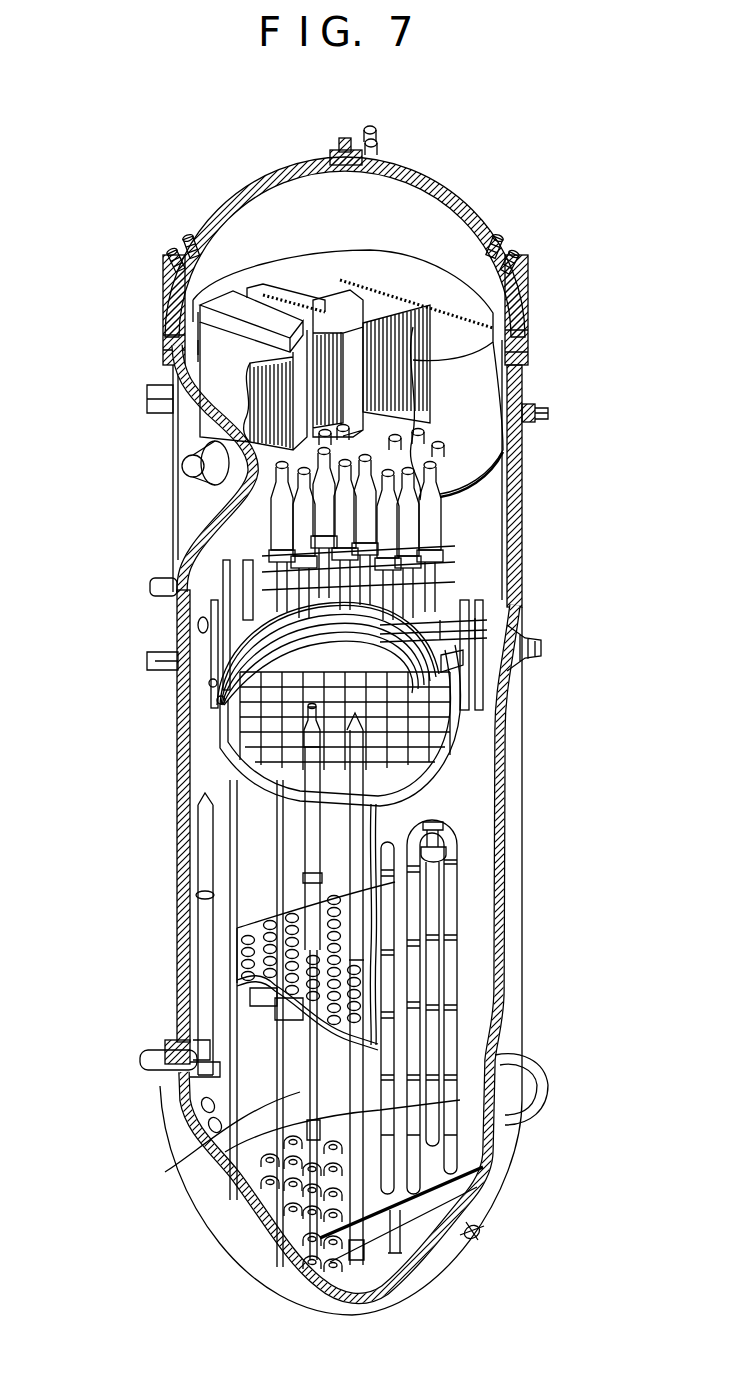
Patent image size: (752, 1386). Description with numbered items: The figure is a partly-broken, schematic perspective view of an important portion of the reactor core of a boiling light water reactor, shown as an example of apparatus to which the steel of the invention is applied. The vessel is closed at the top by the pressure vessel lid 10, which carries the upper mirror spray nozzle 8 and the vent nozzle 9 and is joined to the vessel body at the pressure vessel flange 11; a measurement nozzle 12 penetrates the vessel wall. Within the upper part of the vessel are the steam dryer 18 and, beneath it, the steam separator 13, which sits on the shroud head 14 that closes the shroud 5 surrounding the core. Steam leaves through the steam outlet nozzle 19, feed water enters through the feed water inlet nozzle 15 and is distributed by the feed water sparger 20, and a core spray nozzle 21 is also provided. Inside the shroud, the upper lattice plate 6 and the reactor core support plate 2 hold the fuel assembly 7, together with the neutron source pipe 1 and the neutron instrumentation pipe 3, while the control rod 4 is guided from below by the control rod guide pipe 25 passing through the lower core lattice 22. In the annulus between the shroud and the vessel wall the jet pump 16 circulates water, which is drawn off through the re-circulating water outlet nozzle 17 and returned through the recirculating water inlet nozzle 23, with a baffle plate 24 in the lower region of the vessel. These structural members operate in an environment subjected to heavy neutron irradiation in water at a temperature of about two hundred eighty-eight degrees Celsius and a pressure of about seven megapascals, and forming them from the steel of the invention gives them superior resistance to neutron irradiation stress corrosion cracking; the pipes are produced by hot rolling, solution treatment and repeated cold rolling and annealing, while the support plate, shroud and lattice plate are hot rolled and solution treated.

The neutron source pipe 1 is at (305, 823).
The reactor core support plate 2 is at (237, 976).
The neutron instrumentation pipe 3 is at (262, 792).
The control rod 4 is at (362, 892).
The shroud 5 is at (230, 862).
The upper lattice plate 6 is at (240, 727).
The fuel assembly 7 is at (445, 790).
The upper mirror spray nozzle 8 is at (385, 140).
The vent nozzle 9 is at (335, 152).
The pressure vessel lid 10 is at (232, 210).
The pressure vessel flange 11 is at (528, 345).
The measurement nozzle 12 is at (546, 414).
The steam separator 13 is at (445, 532).
The shroud head 14 is at (420, 642).
The feed water inlet nozzle 15 is at (546, 657).
The jet pump 16 is at (458, 918).
The re-circulating water outlet nozzle 17 is at (548, 1092).
The steam dryer 18 is at (215, 356).
The steam outlet nozzle 19 is at (183, 476).
The feed water sparger 20 is at (196, 624).
The core spray nozzle 21 is at (163, 660).
The lower core lattice 22 is at (280, 1013).
The recirculating water inlet nozzle 23 is at (160, 1053).
The baffle plate 24 is at (312, 1088).
The control rod guide pipe 25 is at (348, 1180).